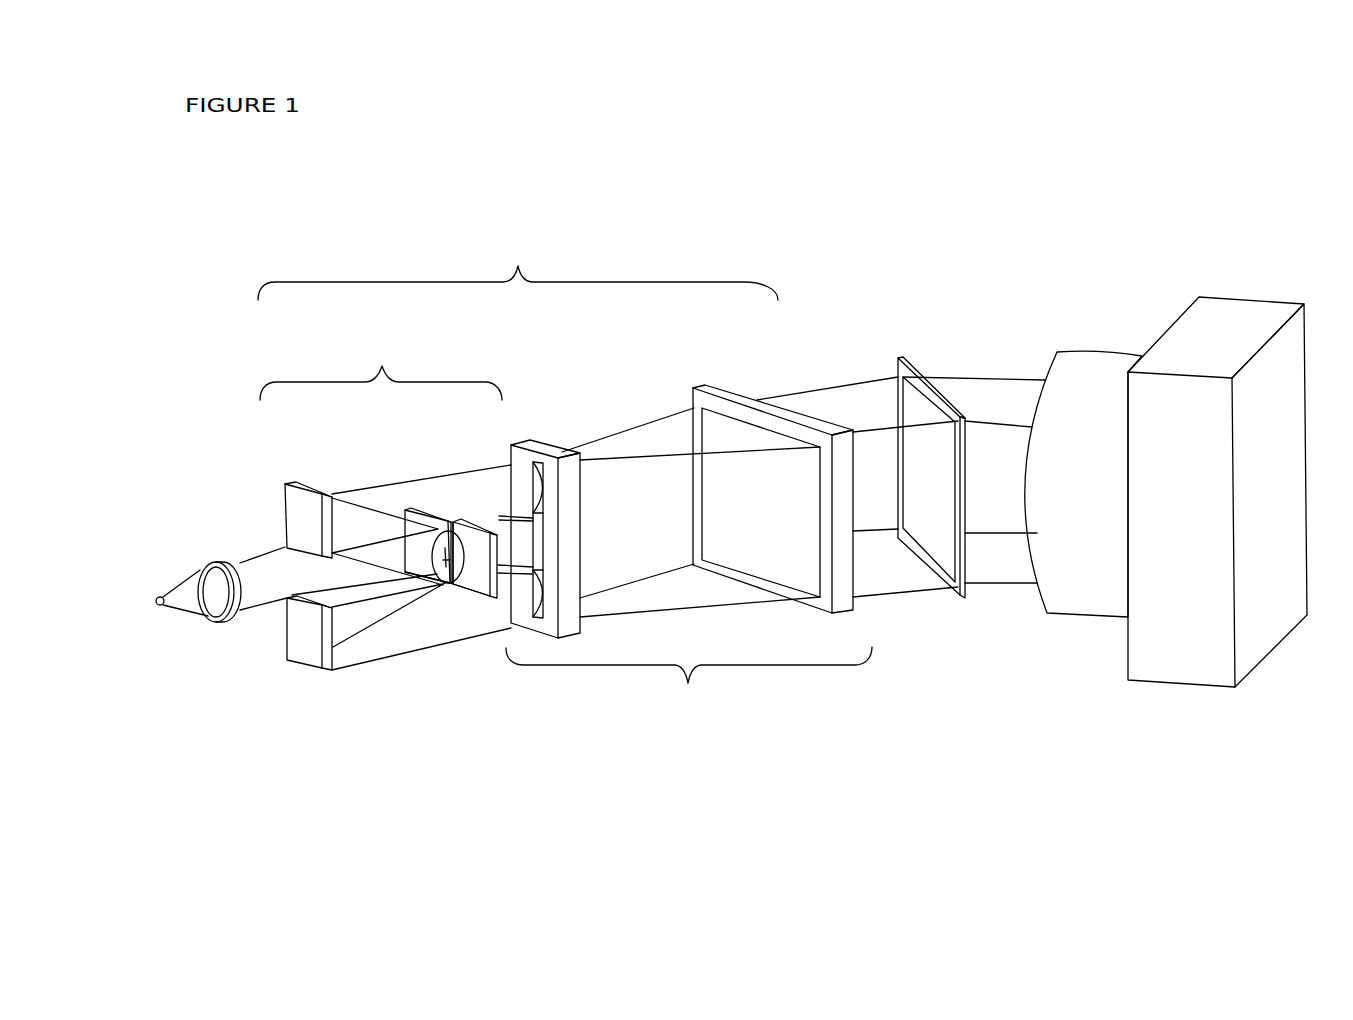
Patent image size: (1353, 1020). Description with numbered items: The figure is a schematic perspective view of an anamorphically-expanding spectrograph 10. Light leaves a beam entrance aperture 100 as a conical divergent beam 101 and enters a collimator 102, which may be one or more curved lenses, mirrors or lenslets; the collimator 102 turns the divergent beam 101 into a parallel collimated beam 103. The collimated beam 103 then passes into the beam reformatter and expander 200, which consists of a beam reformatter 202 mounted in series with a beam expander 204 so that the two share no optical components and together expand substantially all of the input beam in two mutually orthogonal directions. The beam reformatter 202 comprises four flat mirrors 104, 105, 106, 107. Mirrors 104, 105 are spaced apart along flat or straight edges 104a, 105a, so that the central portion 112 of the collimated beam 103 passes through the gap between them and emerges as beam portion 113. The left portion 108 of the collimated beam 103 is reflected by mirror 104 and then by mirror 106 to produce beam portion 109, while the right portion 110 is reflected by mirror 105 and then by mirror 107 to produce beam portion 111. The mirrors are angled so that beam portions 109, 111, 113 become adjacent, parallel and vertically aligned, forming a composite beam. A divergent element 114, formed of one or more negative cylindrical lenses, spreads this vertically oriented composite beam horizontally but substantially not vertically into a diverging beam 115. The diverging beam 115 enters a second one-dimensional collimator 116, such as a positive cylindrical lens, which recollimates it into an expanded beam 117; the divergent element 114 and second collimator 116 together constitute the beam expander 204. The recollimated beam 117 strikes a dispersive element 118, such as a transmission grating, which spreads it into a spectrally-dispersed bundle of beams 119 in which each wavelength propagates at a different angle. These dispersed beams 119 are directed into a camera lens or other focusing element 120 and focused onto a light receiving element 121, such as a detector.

The anamorphically-expanding spectrograph 10 is at (855, 220).
The beam entrance aperture 100 is at (156, 597).
The divergent beam 101 is at (185, 590).
The collimator 102 is at (213, 560).
The collimated beam 103 is at (263, 567).
The flat mirror 104 is at (422, 512).
The straight edge of mirror 104 104a is at (435, 583).
The flat mirror 105 is at (472, 585).
The straight edge of mirror 105 105a is at (445, 580).
The flat mirror 106 is at (312, 657).
The flat mirror 107 is at (303, 498).
The left portion of the collimated beam 108 is at (440, 525).
The beam portion 109 is at (497, 612).
The right portion of the collimated beam 110 is at (456, 590).
The beam portion 111 is at (463, 488).
The central portion of the collimated beam 112 is at (448, 557).
The beam portion 113 is at (502, 545).
The divergent element 114 is at (532, 442).
The diverging beam 115 is at (647, 440).
The second one-dimensional collimator 116 is at (722, 392).
The expanded recollimated beam 117 is at (812, 395).
The dispersive element 118 is at (898, 358).
The spectrally-dispersed bundle of beams 119 is at (983, 393).
The focusing element 120 is at (1077, 382).
The light receiving element 121 is at (1185, 325).
The beam reformatter and expander 200 is at (518, 269).
The beam reformatter 202 is at (381, 373).
The beam expander 204 is at (689, 679).